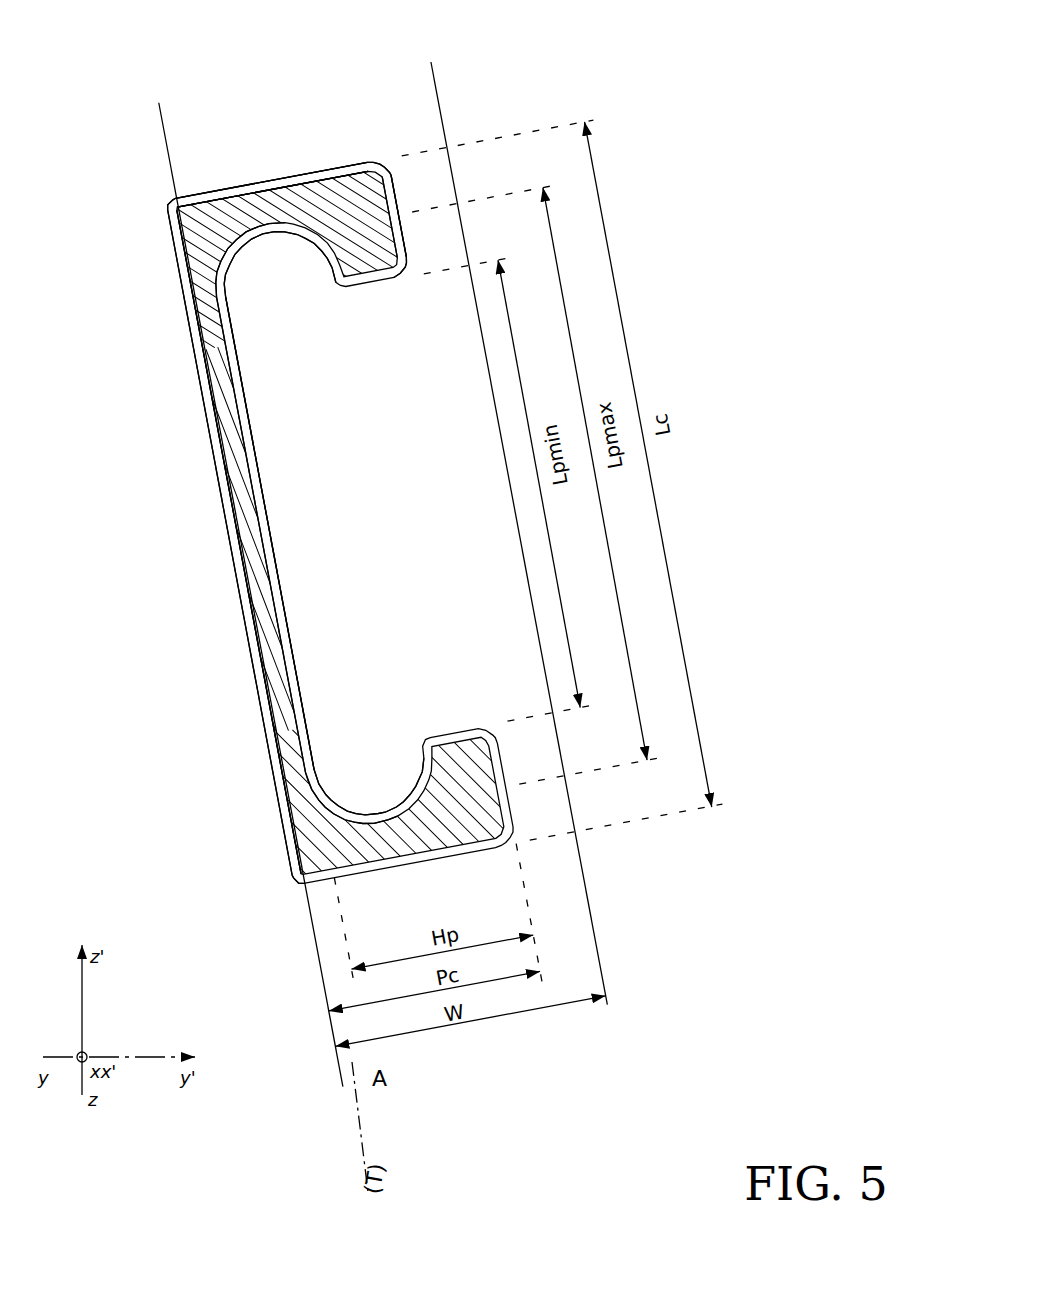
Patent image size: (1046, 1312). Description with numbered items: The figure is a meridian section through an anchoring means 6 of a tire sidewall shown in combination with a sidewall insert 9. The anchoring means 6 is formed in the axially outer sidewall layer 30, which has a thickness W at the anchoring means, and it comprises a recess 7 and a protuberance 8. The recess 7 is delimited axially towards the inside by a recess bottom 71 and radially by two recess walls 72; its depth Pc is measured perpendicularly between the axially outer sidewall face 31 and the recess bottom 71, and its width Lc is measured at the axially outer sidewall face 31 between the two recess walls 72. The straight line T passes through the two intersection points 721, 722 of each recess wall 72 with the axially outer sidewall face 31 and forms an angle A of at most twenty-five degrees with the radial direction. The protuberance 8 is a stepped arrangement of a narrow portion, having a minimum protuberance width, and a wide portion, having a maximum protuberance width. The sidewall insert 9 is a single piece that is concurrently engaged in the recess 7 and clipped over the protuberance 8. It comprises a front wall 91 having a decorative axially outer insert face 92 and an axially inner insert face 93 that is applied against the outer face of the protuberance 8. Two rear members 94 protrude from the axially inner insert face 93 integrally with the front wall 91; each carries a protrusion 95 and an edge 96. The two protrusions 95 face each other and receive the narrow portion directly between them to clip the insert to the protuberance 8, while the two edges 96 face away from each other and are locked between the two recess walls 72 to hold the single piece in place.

The axially outer sidewall layer 30 is at (228, 118).
The axially outer sidewall face 31 is at (160, 151).
The recess walls 72 is at (288, 170).
The intersection point 721 is at (178, 205).
The intersection point 722 is at (300, 886).
The recess 7 is at (236, 222).
The recess bottom 71 is at (401, 189).
The rear members 94 is at (288, 206).
The protrusion 95 is at (362, 258).
The edge 96 is at (305, 193).
The sidewall insert 9 is at (202, 417).
The front wall 91 is at (232, 478).
The axially outer insert face 92 is at (258, 655).
The axially inner insert face 93 is at (262, 547).
The anchoring means 6 is at (430, 380).
The protuberance 8 is at (296, 485).